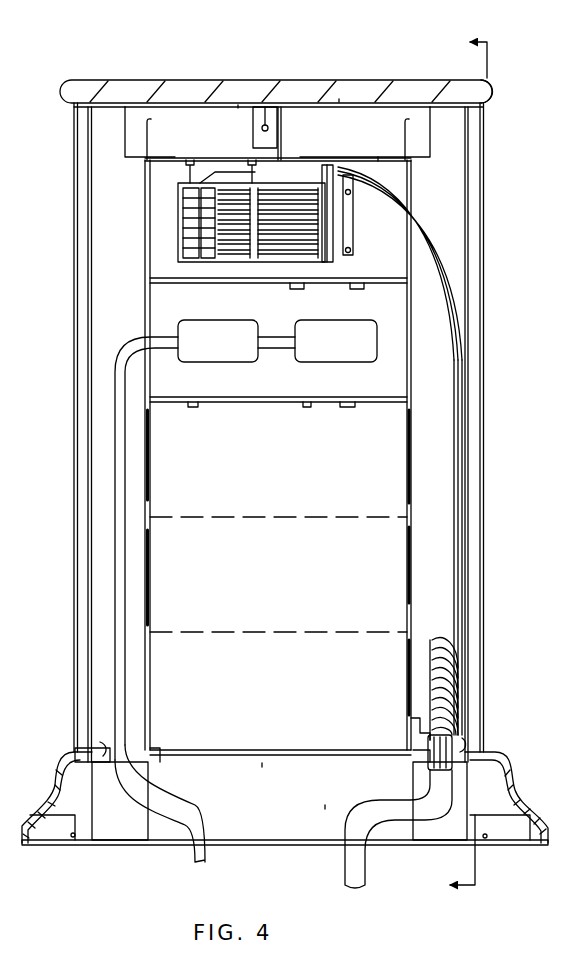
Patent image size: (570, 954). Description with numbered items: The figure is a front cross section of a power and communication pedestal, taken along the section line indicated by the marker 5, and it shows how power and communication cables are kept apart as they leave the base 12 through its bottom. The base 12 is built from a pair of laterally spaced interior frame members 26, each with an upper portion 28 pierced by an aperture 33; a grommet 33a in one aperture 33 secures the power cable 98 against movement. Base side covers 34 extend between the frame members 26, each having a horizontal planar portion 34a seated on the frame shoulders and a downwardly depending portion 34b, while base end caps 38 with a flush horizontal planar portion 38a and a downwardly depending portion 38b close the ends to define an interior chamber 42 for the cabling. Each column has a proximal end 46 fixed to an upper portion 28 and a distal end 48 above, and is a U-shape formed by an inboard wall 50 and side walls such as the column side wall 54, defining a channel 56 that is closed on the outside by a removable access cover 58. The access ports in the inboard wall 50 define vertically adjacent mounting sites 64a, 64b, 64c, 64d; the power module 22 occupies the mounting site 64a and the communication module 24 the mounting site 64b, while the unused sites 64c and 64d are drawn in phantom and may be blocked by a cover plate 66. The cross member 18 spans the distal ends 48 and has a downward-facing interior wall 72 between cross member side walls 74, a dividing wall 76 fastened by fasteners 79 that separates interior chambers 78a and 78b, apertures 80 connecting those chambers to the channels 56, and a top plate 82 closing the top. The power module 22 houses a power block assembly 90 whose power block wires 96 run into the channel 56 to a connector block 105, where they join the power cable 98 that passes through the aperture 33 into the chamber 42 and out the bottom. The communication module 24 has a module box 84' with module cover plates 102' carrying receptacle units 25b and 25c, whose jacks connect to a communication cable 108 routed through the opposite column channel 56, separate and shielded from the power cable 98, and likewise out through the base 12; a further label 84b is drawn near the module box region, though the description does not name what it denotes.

The base 12 is at (548, 848).
The cross member 18 is at (336, 112).
The power module 22 is at (385, 258).
The communication module 24 is at (273, 405).
The receptacle unit 25b is at (183, 357).
The receptacle unit 25c is at (356, 355).
The interior frame member 26 is at (123, 833).
The upper portion 28 is at (60, 745).
The aperture 33 is at (105, 745).
The grommet 33a is at (465, 740).
The base side cover 34 is at (210, 820).
The horizontal planar portion 34a is at (290, 708).
The downwardly depending portion 34b is at (569, 830).
The base end cap 38 is at (22, 845).
The horizontal planar portion 38a is at (72, 752).
The downwardly depending portion 38b is at (38, 803).
The interior chamber 42 is at (325, 808).
The proximal end 46 is at (155, 752).
The distal end 48 is at (74, 105).
The inboard wall 50 is at (147, 280).
The column side wall 54 is at (128, 200).
The channel 56 is at (110, 330).
The access cover 58 is at (484, 150).
The mounting site 64a is at (400, 232).
The mounting site 64b is at (410, 339).
The mounting site 64c is at (396, 486).
The mounting site 64d is at (402, 589).
The cover plate 66 is at (405, 450).
The interior wall 72 is at (348, 158).
The cross member side wall 74 is at (218, 118).
The dividing wall 76 is at (303, 152).
The interior chamber 78a is at (241, 104).
The interior chamber 78b is at (340, 100).
The fastener 79 is at (263, 123).
The aperture 80 is at (140, 118).
The top plate 82 is at (488, 90).
The module box 84' is at (303, 443).
The bracket 84b is at (345, 405).
The power block assembly 90 is at (180, 192).
The power block wires 96 is at (463, 478).
The power cable 98 is at (375, 818).
The module cover plate 102' is at (208, 428).
The connector block 105 is at (420, 640).
The communication cable 108 is at (120, 616).
The section line 5 is at (470, 466).